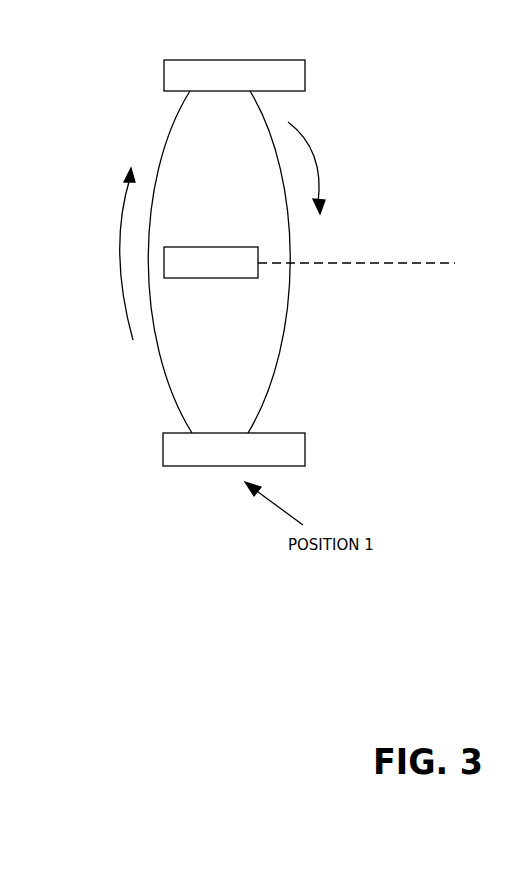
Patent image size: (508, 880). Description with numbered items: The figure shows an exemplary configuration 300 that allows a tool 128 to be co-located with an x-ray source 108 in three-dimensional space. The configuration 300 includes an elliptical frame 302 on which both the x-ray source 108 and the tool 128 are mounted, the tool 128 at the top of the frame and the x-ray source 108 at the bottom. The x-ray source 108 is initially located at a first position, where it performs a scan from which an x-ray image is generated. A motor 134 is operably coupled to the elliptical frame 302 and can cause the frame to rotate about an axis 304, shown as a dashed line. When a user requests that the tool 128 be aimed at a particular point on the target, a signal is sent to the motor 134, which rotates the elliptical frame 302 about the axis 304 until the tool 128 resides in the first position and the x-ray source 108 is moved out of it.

The tool 128 is at (275, 60).
The x-ray source 108 is at (305, 449).
The motor 134 is at (195, 278).
The elliptical frame 302 is at (280, 357).
The axis 304 is at (367, 263).
The configuration 300 is at (383, 122).